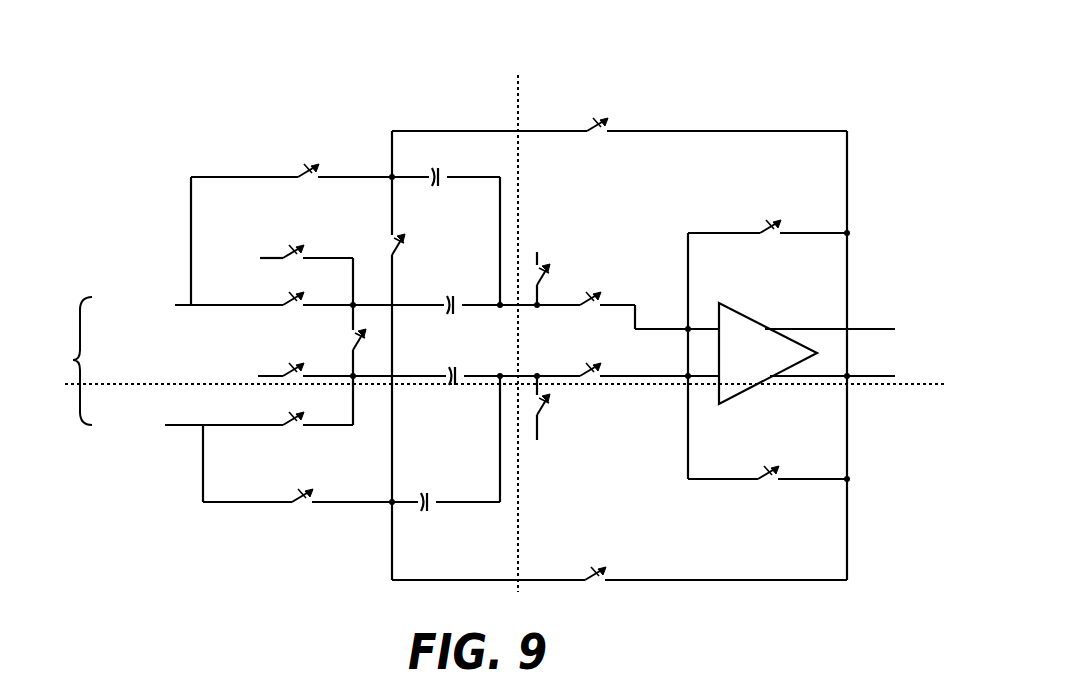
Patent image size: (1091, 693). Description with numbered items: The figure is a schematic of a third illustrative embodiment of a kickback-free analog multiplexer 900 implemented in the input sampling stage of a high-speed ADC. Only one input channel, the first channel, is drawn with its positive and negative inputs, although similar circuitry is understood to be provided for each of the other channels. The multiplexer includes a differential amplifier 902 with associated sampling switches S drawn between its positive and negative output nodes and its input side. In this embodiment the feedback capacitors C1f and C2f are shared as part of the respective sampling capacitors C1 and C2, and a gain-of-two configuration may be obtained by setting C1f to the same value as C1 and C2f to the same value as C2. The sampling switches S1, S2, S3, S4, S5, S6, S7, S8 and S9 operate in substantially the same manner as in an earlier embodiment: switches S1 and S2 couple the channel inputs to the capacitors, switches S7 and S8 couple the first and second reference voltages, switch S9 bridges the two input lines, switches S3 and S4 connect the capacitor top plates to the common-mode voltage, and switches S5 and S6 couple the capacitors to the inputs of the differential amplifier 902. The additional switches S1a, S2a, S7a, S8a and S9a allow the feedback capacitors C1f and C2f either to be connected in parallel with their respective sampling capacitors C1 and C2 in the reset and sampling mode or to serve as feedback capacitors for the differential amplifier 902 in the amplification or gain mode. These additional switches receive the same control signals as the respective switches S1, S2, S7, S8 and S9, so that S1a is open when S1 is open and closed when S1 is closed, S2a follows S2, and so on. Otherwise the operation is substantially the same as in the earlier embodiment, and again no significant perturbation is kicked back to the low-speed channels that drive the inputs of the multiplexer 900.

The analog multiplexer 900 is at (868, 94).
The differential amplifier 902 is at (735, 313).
The additional switch S1a is at (308, 155).
The switch S7 is at (314, 239).
The switch S1 is at (291, 286).
The switch S8 is at (291, 358).
The switch S2 is at (281, 405).
The additional switch S2a is at (280, 484).
The switch S9 is at (344, 343).
The additional switch S9a is at (424, 243).
The feedback capacitor C1f is at (438, 196).
The sampling capacitor C1 is at (447, 285).
The sampling capacitor C2 is at (448, 394).
The feedback capacitor C2f is at (424, 483).
The switch S3 is at (556, 271).
The switch S4 is at (562, 408).
The switch S5 is at (586, 285).
The switch S6 is at (628, 356).
The additional switch S7a is at (600, 107).
The additional switch S8a is at (595, 558).
The sampling switches S is at (767, 348).